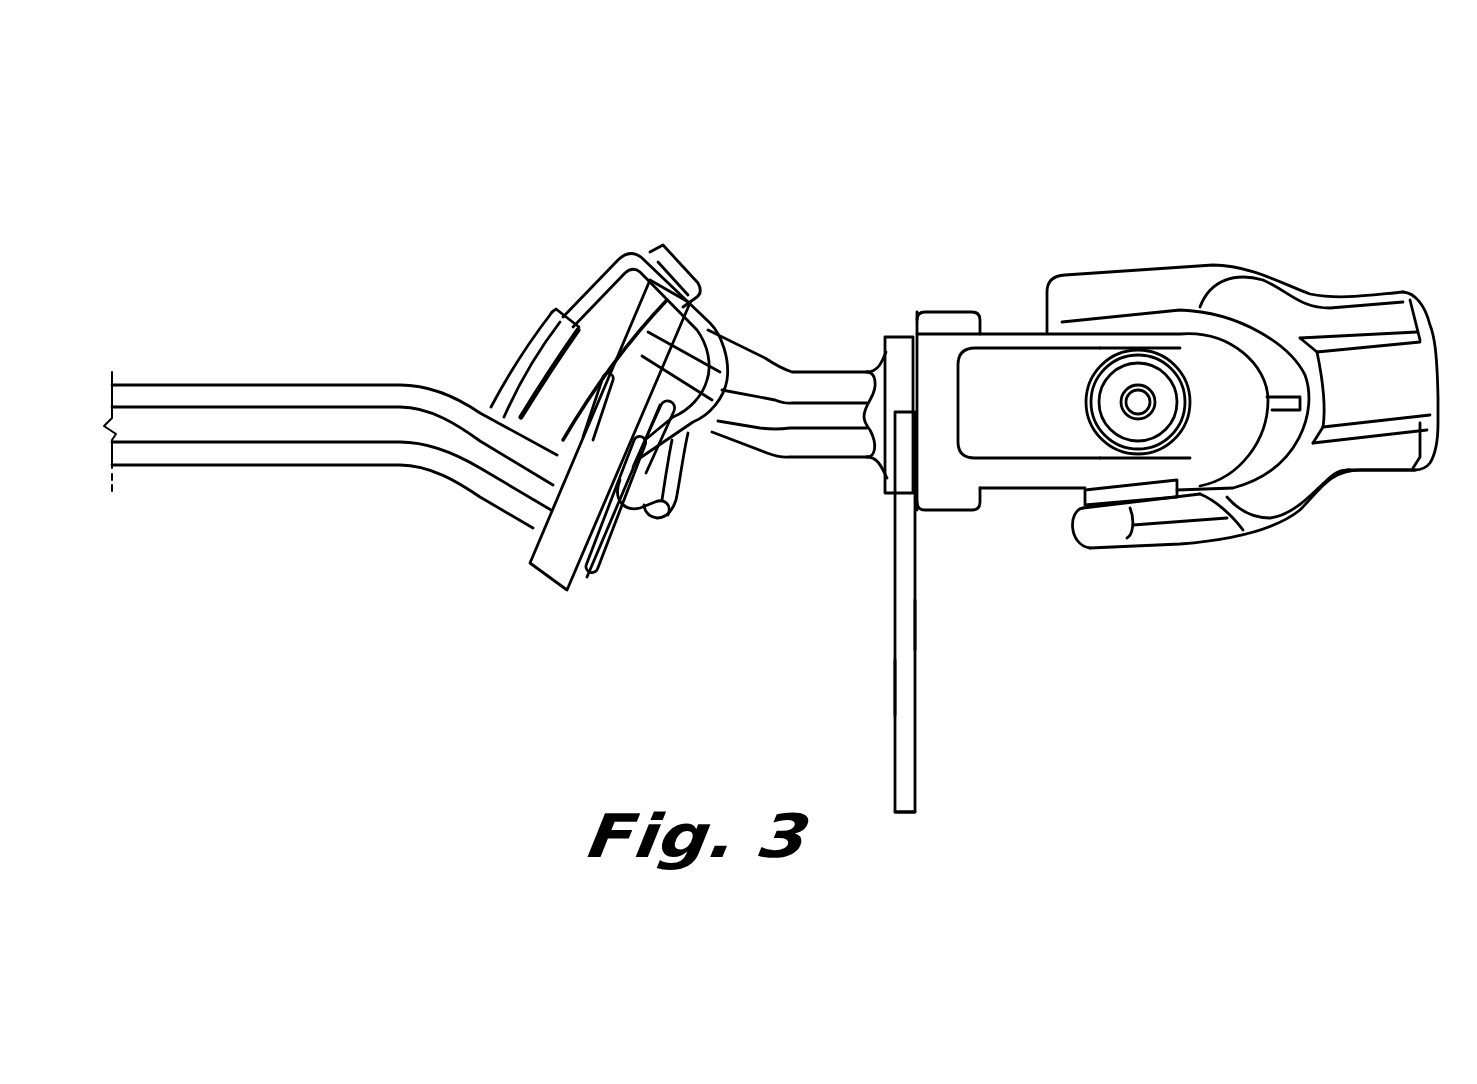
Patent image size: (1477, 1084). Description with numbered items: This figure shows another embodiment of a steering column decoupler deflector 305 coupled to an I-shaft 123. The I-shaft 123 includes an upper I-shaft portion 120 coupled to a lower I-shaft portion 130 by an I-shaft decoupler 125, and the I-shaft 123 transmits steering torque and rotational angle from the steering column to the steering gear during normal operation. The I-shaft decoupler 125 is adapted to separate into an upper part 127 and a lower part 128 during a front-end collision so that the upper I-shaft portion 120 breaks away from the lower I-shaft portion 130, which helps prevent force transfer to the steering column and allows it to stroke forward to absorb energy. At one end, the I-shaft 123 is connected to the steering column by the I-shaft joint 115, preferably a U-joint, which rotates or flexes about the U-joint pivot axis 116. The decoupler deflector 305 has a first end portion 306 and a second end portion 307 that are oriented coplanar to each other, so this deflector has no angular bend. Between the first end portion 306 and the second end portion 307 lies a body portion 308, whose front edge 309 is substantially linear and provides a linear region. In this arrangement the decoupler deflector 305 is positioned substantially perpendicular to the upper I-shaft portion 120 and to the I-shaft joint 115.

The I-shaft 123 is at (394, 193).
The lower I-shaft portion 130 is at (275, 385).
The upper I-shaft portion 120 is at (827, 370).
The I-shaft decoupler 125 is at (660, 542).
The upper part 127 is at (678, 258).
The lower part 128 is at (533, 565).
The I-shaft joint 115 is at (1007, 332).
The U-joint pivot axis 116 is at (1140, 384).
The first end portion 306 is at (903, 333).
The decoupler deflector 305 is at (915, 708).
The second end portion 307 is at (900, 813).
The body portion 308 is at (915, 623).
The front edge 309 is at (893, 688).